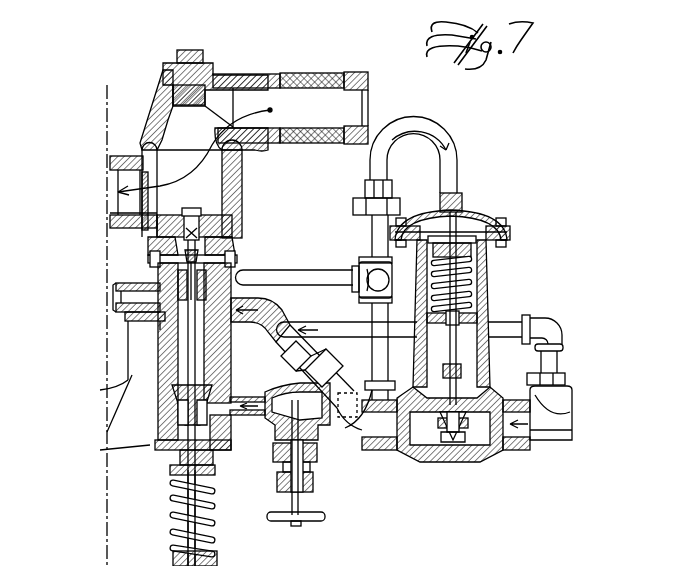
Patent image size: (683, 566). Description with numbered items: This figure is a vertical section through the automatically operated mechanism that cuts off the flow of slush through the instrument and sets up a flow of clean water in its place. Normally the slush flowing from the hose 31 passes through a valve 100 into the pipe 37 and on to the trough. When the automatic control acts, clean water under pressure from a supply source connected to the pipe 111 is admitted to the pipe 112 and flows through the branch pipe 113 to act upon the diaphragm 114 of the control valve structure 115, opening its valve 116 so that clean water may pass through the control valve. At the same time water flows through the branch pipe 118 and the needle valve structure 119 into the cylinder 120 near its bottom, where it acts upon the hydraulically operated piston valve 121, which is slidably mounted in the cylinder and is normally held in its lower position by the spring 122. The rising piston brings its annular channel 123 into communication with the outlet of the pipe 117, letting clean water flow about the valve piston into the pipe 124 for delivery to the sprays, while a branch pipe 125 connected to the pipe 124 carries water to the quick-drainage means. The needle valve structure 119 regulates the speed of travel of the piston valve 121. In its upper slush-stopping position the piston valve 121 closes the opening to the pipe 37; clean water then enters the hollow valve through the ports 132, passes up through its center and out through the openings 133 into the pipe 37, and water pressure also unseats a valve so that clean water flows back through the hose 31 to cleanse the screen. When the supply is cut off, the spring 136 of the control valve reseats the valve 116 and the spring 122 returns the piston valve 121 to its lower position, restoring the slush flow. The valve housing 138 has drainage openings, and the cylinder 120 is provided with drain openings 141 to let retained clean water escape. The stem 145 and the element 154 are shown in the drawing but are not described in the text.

The hose 31 is at (244, 113).
The pipe 37 is at (110, 216).
The valve 100 is at (243, 180).
The pipe 111 is at (497, 325).
The pipe 112 is at (300, 277).
The branch pipe 113 is at (452, 172).
The diaphragm 114 is at (479, 212).
The control valve structure 115 is at (497, 283).
The valve 116 is at (453, 445).
The pipe 117 is at (368, 427).
The branch pipe 118 is at (378, 313).
The needle valve structure 119 is at (278, 422).
The cylinder 120 is at (100, 450).
The piston valve 121 is at (110, 430).
The spring 122 is at (170, 502).
The annular channel 123 is at (158, 333).
The pipe 124 is at (143, 297).
The branch pipe 125 is at (125, 355).
The ports 132 is at (228, 372).
The openings 133 is at (243, 226).
The spring 136 is at (488, 263).
The valve housing 138 is at (192, 208).
The drain openings 141 is at (237, 258).
The hand valve 145 is at (300, 504).
The tube 154 is at (215, 163).